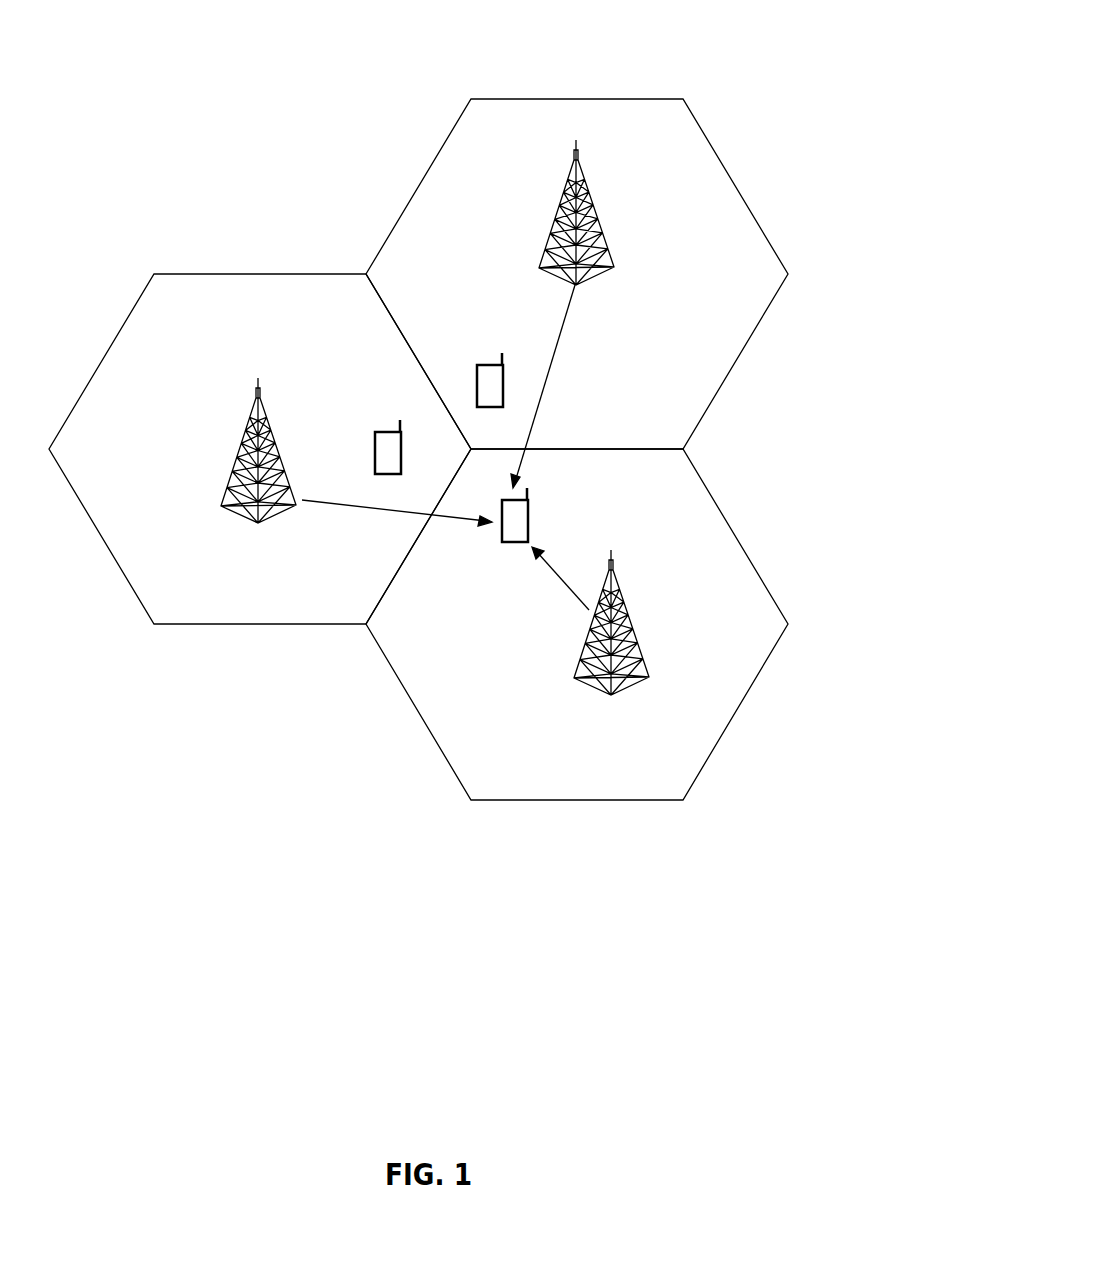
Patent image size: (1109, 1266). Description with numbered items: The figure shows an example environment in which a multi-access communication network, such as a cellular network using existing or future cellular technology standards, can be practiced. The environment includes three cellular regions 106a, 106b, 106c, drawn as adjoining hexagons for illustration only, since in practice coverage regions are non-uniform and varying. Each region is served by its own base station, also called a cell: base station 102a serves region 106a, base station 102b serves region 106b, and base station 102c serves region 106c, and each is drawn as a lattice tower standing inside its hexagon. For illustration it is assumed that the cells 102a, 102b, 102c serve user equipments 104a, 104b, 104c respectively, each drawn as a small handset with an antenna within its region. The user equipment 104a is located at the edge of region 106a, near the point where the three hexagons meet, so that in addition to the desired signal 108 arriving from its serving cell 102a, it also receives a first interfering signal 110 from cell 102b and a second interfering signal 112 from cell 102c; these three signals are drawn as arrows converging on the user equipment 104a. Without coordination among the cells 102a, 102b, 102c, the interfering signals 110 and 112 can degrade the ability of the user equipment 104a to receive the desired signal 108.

The base station (cell) 102a is at (623, 600).
The base station (cell) 102b is at (600, 209).
The base station (cell) 102c is at (240, 455).
The user equipment 104a is at (530, 508).
The user equipment 104b is at (478, 365).
The user equipment 104c is at (374, 435).
The cellular region 106a is at (580, 800).
The cellular region 106b is at (578, 99).
The cellular region 106c is at (260, 275).
The desired signal 108 is at (562, 580).
The first interfering signal 110 is at (556, 350).
The second interfering signal 112 is at (345, 505).